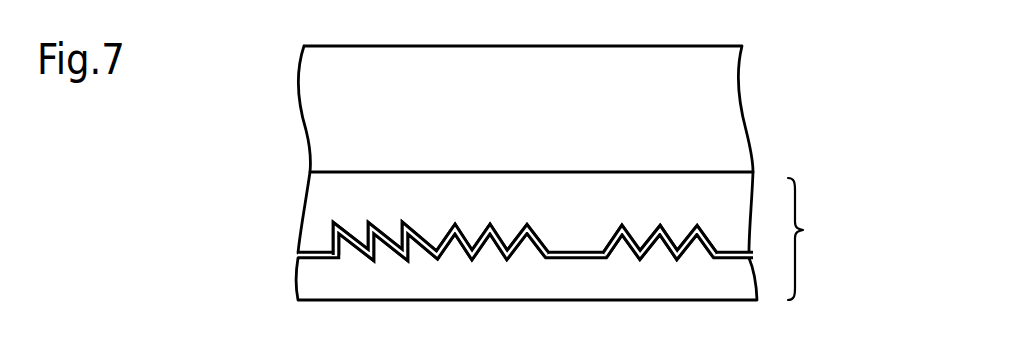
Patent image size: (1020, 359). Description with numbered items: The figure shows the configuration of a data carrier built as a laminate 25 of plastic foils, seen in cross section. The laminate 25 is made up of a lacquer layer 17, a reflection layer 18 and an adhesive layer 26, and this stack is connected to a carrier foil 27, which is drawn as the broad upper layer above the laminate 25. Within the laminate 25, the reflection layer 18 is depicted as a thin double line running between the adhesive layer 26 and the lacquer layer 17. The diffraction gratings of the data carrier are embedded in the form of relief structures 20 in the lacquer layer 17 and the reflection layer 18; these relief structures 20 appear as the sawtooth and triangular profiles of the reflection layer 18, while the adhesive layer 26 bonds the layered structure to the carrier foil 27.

The carrier foil 27 is at (685, 67).
The adhesive layer 26 is at (317, 205).
The laminate 25 is at (817, 239).
The lacquer layer 17 is at (460, 283).
The reflection layer 18 is at (317, 262).
The relief structures 20 is at (627, 275).